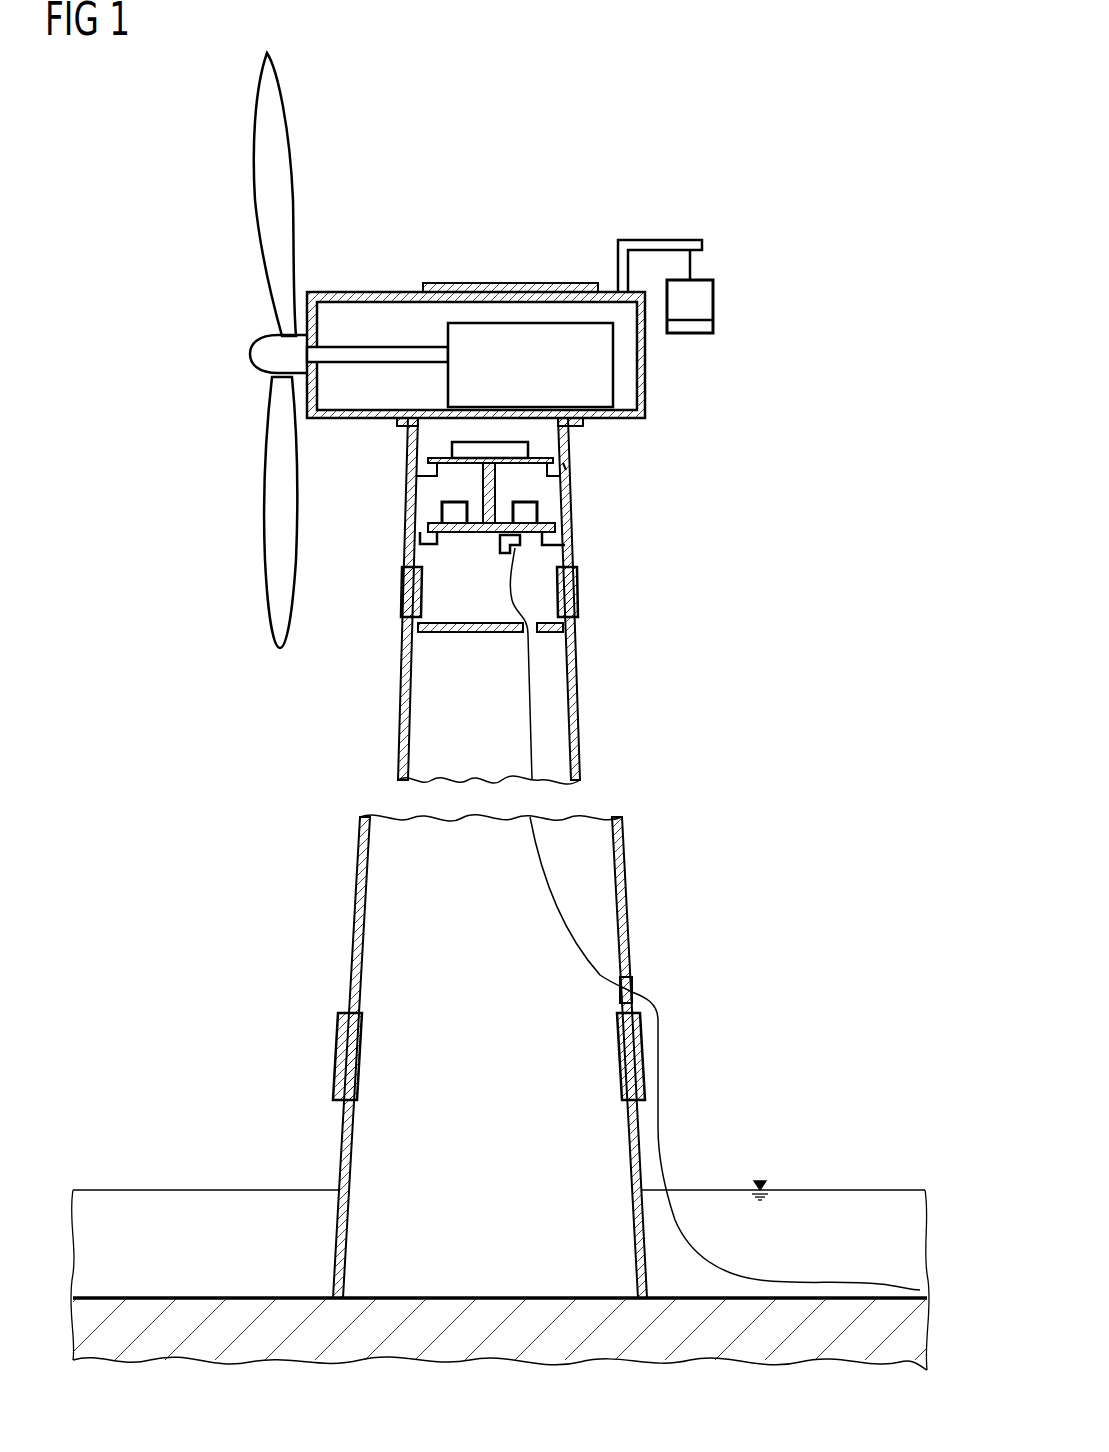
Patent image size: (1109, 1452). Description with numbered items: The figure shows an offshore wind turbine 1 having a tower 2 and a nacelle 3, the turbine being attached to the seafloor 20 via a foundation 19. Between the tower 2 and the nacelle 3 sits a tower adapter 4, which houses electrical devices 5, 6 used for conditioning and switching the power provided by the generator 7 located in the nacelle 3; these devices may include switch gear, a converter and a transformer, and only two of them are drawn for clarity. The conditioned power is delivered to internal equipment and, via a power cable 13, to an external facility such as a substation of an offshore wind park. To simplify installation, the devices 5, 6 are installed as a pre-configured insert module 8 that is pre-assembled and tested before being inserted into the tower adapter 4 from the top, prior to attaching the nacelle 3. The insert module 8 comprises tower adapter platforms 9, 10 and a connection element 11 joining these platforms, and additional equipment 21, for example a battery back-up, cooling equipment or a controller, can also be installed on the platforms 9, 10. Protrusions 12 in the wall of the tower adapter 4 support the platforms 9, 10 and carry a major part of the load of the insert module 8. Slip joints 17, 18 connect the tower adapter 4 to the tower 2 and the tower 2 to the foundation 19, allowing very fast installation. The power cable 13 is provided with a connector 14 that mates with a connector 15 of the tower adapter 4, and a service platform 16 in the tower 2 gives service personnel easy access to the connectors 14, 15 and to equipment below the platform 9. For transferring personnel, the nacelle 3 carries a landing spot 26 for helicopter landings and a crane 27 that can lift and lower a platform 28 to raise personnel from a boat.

The wind turbine 1 is at (792, 532).
The tower 2 is at (580, 757).
The nacelle 3 is at (645, 388).
The tower adapter 4 is at (567, 468).
The electrical device 5 is at (528, 512).
The electrical device 6 is at (523, 450).
The generator 7 is at (512, 340).
The insert module 8 is at (490, 542).
The tower adapter platform 9 is at (553, 528).
The tower adapter platform 10 is at (437, 460).
The connection element 11 is at (487, 482).
The protrusion 12 is at (427, 537).
The power cable 13 is at (662, 1050).
The connector 14 is at (520, 557).
The connector 15 is at (518, 540).
The service platform 16 is at (455, 636).
The slip joint 17 is at (587, 597).
The slip joint 18 is at (332, 1055).
The foundation 19 is at (345, 1150).
The seafloor 20 is at (197, 1298).
The additional equipment 21 is at (450, 513).
The landing spot 26 is at (455, 270).
The crane 27 is at (665, 227).
The platform 28 is at (715, 327).